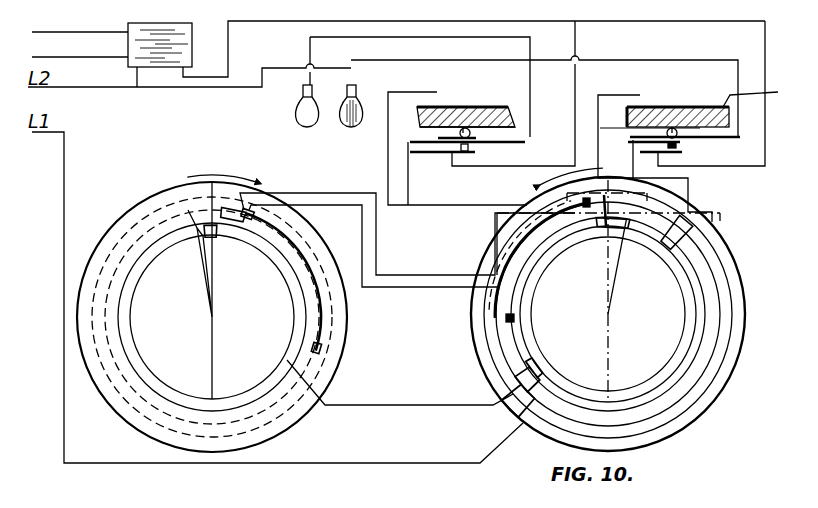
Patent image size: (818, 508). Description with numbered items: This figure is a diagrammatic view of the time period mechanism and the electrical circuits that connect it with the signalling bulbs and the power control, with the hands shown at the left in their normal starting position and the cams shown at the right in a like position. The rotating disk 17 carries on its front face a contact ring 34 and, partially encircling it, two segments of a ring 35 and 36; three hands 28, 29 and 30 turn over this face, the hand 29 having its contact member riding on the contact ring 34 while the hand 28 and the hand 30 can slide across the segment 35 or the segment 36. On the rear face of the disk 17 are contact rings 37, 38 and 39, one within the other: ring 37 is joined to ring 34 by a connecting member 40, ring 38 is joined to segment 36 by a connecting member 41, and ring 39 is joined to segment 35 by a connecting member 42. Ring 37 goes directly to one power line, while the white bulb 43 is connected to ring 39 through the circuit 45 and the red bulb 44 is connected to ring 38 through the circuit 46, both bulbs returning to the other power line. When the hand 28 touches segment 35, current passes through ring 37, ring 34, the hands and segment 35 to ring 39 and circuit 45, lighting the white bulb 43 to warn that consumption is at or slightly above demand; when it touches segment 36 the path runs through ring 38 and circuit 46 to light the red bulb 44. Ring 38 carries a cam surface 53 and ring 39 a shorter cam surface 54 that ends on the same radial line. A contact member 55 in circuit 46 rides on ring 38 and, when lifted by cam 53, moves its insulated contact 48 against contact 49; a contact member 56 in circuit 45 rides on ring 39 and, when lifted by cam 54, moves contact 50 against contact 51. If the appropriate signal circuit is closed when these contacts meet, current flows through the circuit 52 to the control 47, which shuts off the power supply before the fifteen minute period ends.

The disk 17 is at (285, 421).
The hand 28 is at (228, 251).
The hand 29 is at (213, 349).
The hand 30 is at (203, 278).
The contact ring 34 is at (242, 381).
The segment of a ring 35 is at (226, 210).
The segment of a ring 36 is at (320, 333).
The contact ring 37 is at (683, 357).
The contact ring 38 is at (630, 127).
The contact ring 39 is at (509, 128).
The connecting member 40 is at (397, 405).
The connecting member 41 is at (425, 288).
The connecting member 42 is at (390, 273).
The electric light bulb 43 is at (306, 125).
The electric light bulb 44 is at (351, 125).
The circuit 45 is at (418, 38).
The circuit 46 is at (650, 57).
The control 47 is at (192, 36).
The contact 48 is at (680, 142).
The contact 49 is at (672, 153).
The contact 50 is at (478, 145).
The contact 51 is at (453, 153).
The circuit 52 is at (765, 68).
The cam surface 53 is at (638, 128).
The cam surface 54 is at (455, 128).
The contact member 55 is at (708, 106).
The contact member 56 is at (500, 107).